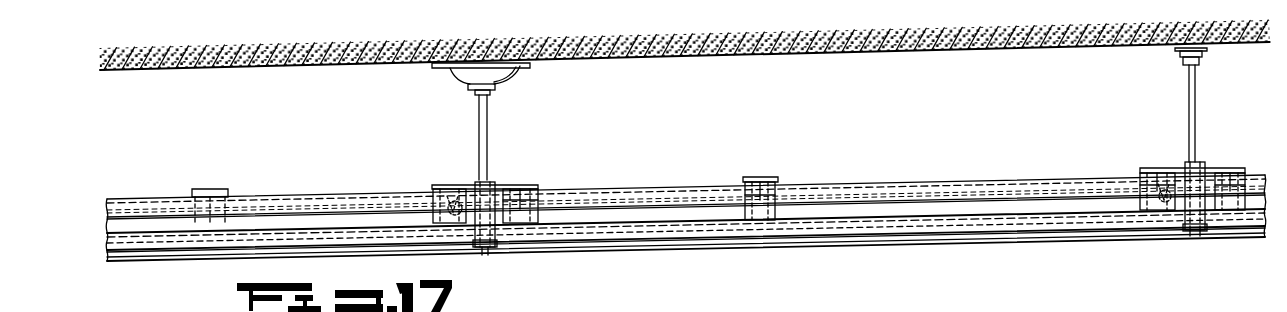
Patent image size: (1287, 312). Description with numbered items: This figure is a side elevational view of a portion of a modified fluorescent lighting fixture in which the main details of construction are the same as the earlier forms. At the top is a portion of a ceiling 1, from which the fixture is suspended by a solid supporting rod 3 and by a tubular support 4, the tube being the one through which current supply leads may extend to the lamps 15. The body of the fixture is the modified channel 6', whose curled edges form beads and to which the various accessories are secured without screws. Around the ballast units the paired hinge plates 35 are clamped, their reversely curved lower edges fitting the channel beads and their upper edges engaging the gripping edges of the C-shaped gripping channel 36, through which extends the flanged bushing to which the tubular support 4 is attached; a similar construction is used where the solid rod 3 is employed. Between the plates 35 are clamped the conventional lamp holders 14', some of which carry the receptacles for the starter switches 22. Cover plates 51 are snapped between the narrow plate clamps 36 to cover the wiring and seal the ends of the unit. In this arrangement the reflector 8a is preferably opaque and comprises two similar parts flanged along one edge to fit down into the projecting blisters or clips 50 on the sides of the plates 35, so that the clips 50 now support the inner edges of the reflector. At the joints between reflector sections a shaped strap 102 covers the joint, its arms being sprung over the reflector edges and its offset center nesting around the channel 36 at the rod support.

The ceiling 1 is at (758, 63).
The solid supporting rod 3 is at (1190, 97).
The tubular support 4 is at (488, 119).
The modified channel 6' is at (686, 251).
The reflector 8a is at (940, 189).
The lamp holder 14' is at (840, 225).
The lamp 15 is at (640, 188).
The starter switch 22 is at (463, 197).
The hinge plate 35 is at (560, 207).
The gripping channel 36 is at (505, 185).
The clip 50 is at (440, 197).
The cover plate 51 is at (779, 190).
The strap 102 is at (500, 238).